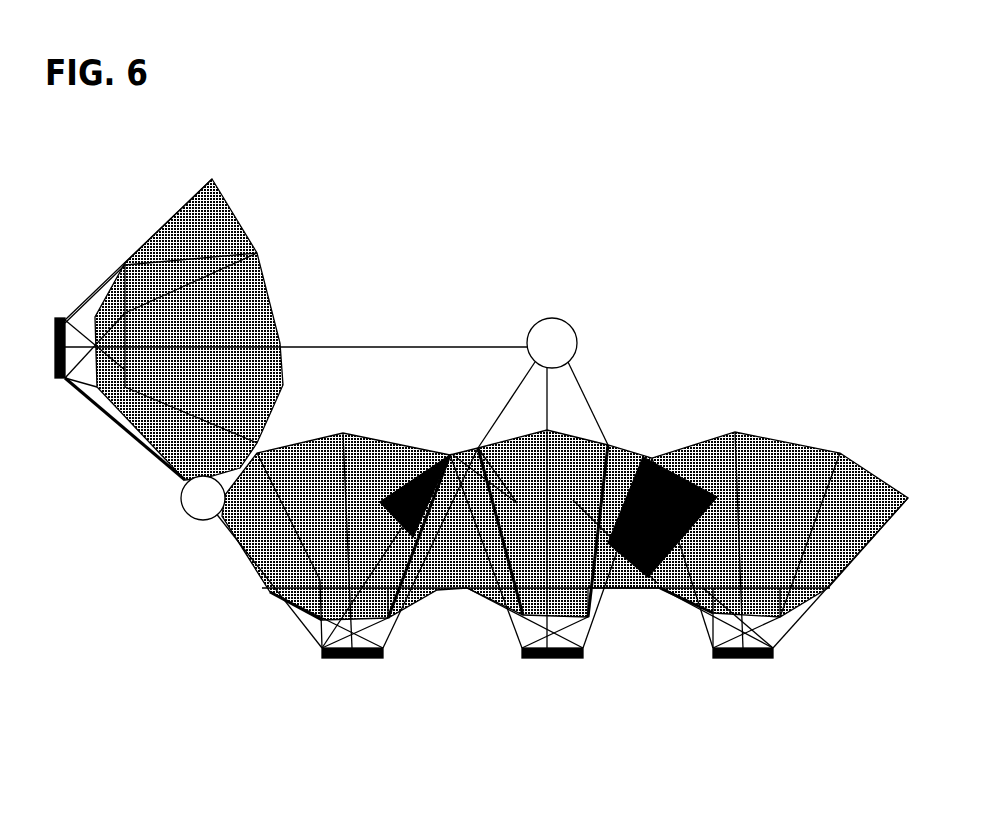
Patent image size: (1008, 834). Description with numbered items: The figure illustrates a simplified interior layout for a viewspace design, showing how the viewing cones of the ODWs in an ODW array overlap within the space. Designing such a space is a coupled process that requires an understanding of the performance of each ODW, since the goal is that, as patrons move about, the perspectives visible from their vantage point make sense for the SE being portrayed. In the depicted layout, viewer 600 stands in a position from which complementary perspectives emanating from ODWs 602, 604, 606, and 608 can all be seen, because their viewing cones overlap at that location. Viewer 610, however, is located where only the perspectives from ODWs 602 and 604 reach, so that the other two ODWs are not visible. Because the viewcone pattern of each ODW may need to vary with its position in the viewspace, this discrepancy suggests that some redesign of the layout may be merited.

The viewer 600 is at (552, 343).
The ODW 602 is at (48, 380).
The ODW 604 is at (350, 658).
The ODW 606 is at (545, 658).
The ODW 608 is at (738, 658).
The viewer 610 is at (200, 520).